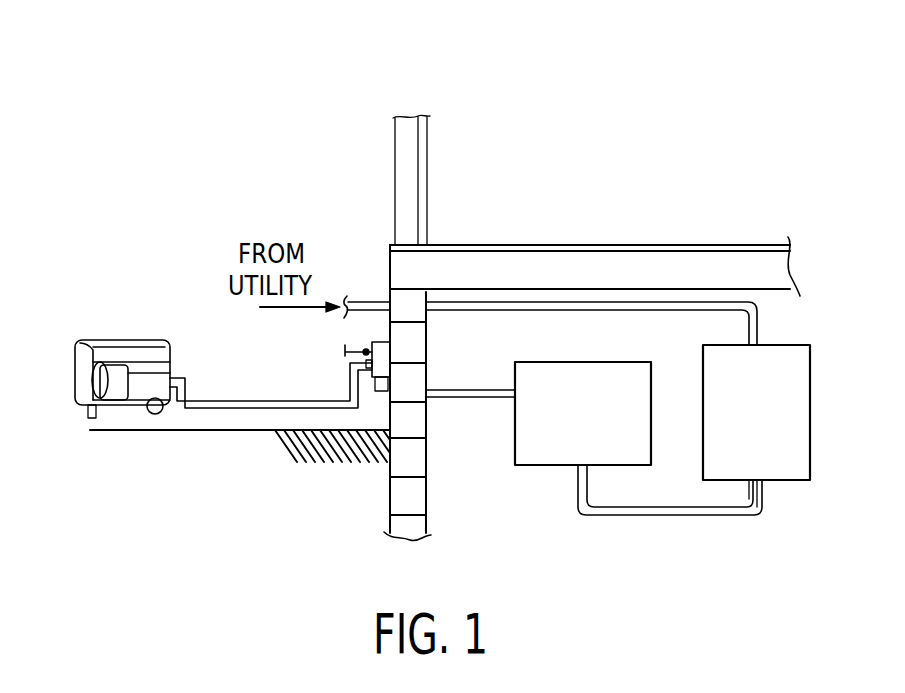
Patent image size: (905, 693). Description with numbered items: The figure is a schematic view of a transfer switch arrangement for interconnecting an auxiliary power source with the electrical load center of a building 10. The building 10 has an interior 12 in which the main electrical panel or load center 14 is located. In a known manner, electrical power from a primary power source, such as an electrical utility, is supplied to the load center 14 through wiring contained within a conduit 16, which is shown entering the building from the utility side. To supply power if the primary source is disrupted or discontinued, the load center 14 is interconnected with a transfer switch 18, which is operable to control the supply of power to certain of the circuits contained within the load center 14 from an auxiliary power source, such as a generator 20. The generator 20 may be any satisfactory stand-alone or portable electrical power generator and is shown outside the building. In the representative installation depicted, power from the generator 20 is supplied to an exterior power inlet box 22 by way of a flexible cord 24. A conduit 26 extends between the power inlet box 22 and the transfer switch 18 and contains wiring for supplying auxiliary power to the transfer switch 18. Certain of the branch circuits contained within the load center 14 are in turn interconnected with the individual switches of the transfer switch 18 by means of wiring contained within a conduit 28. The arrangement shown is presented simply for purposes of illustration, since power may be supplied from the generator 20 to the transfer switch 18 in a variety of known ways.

The building 10 is at (276, 162).
The interior 12 is at (476, 453).
The load center 14 is at (822, 440).
The conduit 16 is at (365, 300).
The transfer switch 18 is at (505, 459).
The generator 20 is at (110, 310).
The exterior power inlet box 22 is at (375, 342).
The flexible cord 24 is at (305, 398).
The conduit 26 is at (465, 388).
The conduit 28 is at (665, 517).